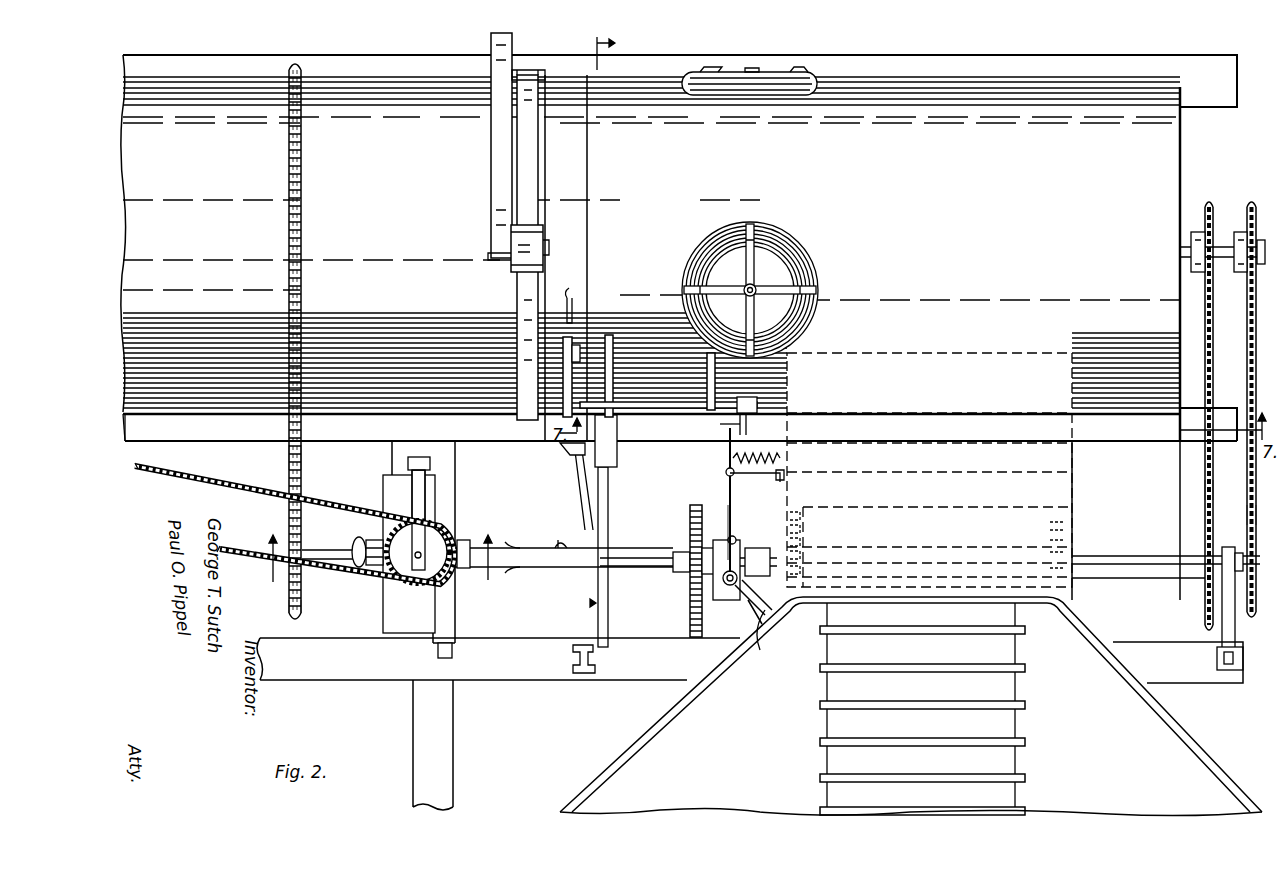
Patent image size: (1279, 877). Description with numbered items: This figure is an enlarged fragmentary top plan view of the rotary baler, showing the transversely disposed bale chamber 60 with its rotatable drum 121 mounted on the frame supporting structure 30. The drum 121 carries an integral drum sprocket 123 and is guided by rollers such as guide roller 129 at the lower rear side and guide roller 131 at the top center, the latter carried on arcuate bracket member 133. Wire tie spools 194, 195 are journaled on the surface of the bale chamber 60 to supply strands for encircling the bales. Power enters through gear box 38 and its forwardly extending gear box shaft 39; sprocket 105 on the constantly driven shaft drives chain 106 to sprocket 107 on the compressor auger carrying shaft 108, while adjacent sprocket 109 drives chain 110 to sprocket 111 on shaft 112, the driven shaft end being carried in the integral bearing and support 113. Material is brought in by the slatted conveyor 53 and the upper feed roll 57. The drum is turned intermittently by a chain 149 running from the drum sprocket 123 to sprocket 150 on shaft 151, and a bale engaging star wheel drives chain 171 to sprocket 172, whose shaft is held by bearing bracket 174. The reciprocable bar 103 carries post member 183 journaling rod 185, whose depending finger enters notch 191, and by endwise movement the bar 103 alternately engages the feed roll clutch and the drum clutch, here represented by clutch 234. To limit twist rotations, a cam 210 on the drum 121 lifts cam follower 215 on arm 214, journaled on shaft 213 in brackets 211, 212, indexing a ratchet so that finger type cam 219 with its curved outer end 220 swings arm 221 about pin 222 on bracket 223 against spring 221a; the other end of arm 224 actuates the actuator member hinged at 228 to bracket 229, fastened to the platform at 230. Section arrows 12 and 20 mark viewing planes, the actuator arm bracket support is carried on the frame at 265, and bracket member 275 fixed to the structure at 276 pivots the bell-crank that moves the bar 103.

The section line 12 is at (380, 564).
The section line / vertical rod 20 is at (578, 340).
The frame supporting structure 30 is at (510, 683).
The gear box 38 is at (458, 612).
The gear box shaft 39 is at (453, 655).
The slatted conveyor 53 is at (1030, 766).
The upper feed roll 57 is at (975, 505).
The bale chamber 60 is at (940, 105).
The reciprocable bar 103 is at (660, 530).
The sprocket 105 is at (1250, 610).
The chain 106 is at (1250, 524).
The sprocket 107 is at (1247, 205).
The compressor auger carrying shaft 108 is at (1205, 272).
The sprocket 109 is at (1205, 222).
The chain 110 is at (1205, 488).
The sprocket 111 is at (1210, 556).
The shaft 112 is at (1113, 580).
The integral bearing and support 113 is at (1222, 650).
The rotatable drum 121 is at (157, 393).
The drum sprocket 123 is at (289, 183).
The guide roller 129 is at (515, 75).
The guide roller 131 is at (515, 270).
The arcuate bracket member 133 is at (492, 220).
The chain 149 is at (289, 460).
The sprocket 150 is at (302, 612).
The shaft 151 is at (340, 550).
The chain 171 is at (188, 480).
The sprocket 172 is at (418, 582).
The bearing bracket 174 is at (408, 480).
The post member 183 is at (462, 545).
The rod 185 is at (557, 545).
The notch 191 is at (501, 566).
The spool 194 is at (818, 262).
The spool 195 is at (800, 78).
The cam 210 is at (566, 297).
The bracket 211 is at (614, 352).
The bracket 212 is at (760, 388).
The shaft 213 is at (622, 403).
The arm 214 is at (559, 360).
The cam follower 215 is at (576, 345).
The finger type cam 219 is at (714, 426).
The curved outer end 220 is at (760, 425).
The arm 221 is at (726, 460).
The spring 221a is at (782, 460).
The pin 222 is at (726, 475).
The bracket 223 is at (784, 478).
The other end of arm 224 is at (728, 505).
The hinge 228 is at (745, 558).
The bracket 229 is at (758, 645).
The fastening point 230 is at (770, 620).
The clutch 234 is at (710, 597).
The mounting point 265 is at (584, 676).
The bracket member 275 is at (580, 512).
The fastening point 276 is at (565, 455).